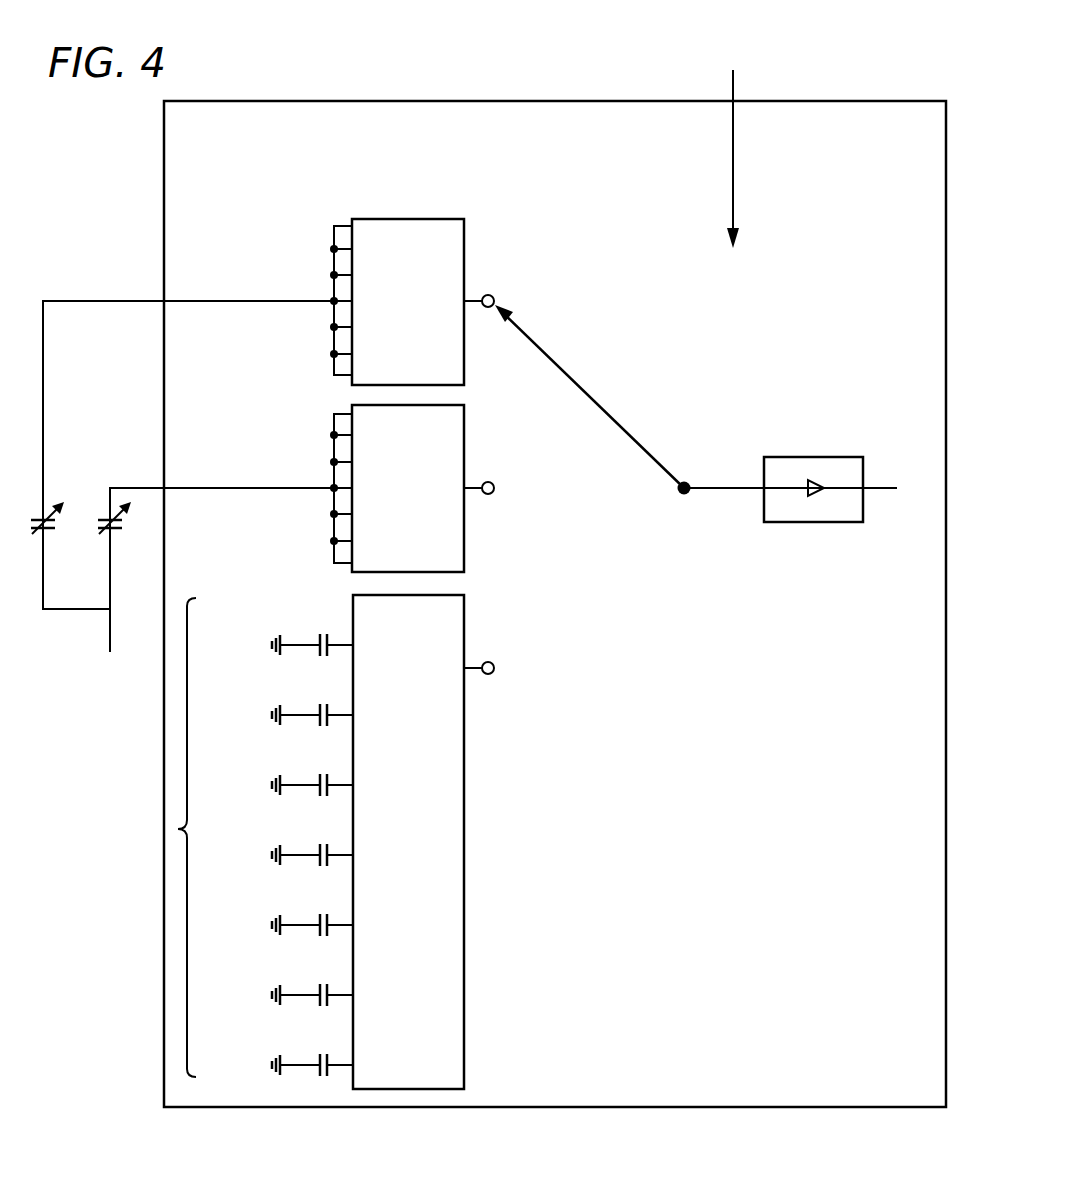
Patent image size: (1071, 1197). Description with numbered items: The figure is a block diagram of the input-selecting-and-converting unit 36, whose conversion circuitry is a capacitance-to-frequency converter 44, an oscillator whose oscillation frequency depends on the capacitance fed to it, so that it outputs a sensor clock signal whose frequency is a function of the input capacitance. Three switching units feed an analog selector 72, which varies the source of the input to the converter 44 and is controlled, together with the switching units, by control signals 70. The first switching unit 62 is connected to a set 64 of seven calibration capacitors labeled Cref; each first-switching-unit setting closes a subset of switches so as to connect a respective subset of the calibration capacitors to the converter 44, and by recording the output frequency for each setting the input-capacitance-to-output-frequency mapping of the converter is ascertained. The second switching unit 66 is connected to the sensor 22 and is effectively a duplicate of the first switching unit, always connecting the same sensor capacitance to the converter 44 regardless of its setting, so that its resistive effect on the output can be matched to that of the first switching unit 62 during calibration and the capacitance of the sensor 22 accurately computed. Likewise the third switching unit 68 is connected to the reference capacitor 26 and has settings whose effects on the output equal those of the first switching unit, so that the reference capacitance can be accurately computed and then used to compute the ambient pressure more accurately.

The input-selecting-and-converting unit 36 is at (164, 185).
The control signals 70 is at (733, 155).
The third switching unit 68 is at (464, 360).
The second switching unit 66 is at (464, 421).
The first switching unit 62 is at (464, 912).
The set of calibration capacitors 64 is at (178, 829).
The variable capacitor 26 is at (52, 528).
The sensor 22 is at (119, 528).
The analog selector 72 is at (628, 442).
The capacitance-to-frequency converter 44 is at (836, 457).